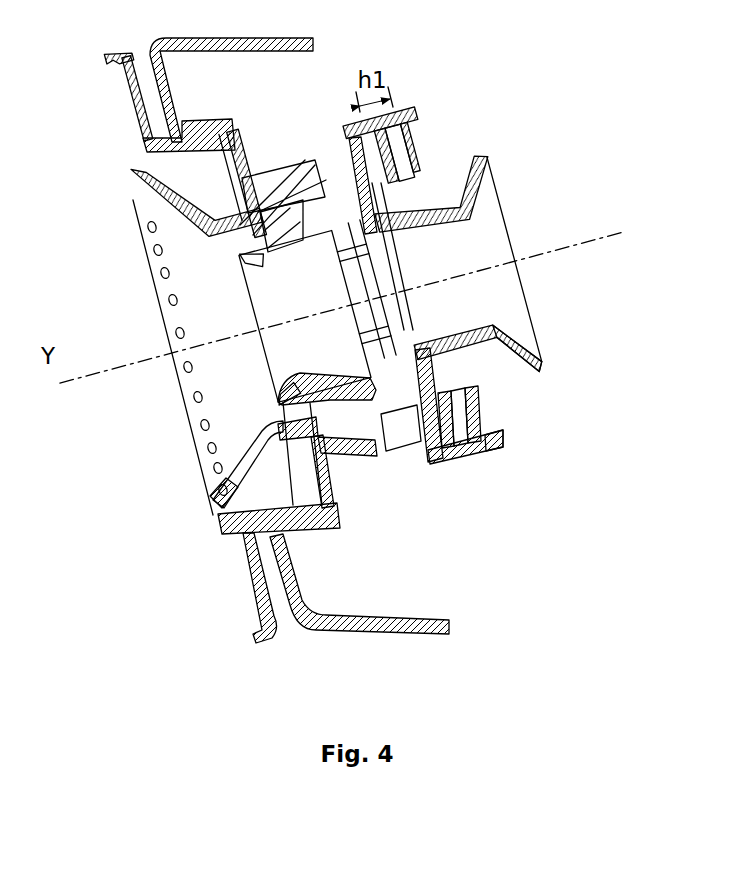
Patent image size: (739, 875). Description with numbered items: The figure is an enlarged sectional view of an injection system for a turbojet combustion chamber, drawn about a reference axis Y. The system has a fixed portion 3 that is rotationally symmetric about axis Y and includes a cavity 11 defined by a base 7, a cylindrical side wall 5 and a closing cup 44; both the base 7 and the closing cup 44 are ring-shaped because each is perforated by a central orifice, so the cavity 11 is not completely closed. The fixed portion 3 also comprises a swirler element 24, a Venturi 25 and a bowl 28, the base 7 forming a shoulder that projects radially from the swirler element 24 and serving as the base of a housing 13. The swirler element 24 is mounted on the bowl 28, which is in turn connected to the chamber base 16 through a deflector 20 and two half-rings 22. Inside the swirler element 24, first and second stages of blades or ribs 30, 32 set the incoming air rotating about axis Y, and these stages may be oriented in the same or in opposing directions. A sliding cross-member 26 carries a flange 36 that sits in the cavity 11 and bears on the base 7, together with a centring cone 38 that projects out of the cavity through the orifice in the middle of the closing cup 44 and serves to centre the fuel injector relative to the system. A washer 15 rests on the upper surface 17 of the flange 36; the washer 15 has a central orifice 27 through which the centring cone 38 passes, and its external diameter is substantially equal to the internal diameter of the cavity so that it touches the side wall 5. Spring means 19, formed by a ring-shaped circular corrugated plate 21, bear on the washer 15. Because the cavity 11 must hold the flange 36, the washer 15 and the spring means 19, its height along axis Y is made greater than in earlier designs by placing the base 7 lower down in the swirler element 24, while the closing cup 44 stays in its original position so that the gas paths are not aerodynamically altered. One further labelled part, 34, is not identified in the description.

The fixed portion 3 is at (348, 136).
The side wall 5 is at (487, 457).
The base 7 is at (420, 455).
The cavity 11 is at (487, 449).
The housing 13 is at (450, 371).
The washer 15 is at (385, 140).
The chamber base 16 is at (430, 634).
The upper surface 17 is at (397, 193).
The spring means 19 is at (408, 155).
The deflector 20 is at (148, 126).
The circular corrugated plate 21 is at (463, 444).
The half-rings 22 is at (334, 533).
The swirler element 24 is at (377, 455).
The Venturi 25 is at (332, 384).
The sliding cross-member 26 is at (540, 368).
The central orifice 27 is at (310, 173).
The bowl 28 is at (160, 231).
The first stage of blades or ribs 30 is at (405, 428).
The second stage of blades or ribs 32 is at (283, 215).
The inner strip 34 is at (440, 449).
The flange 36 is at (488, 168).
The centring cone 38 is at (482, 242).
The closing cup 44 is at (490, 407).